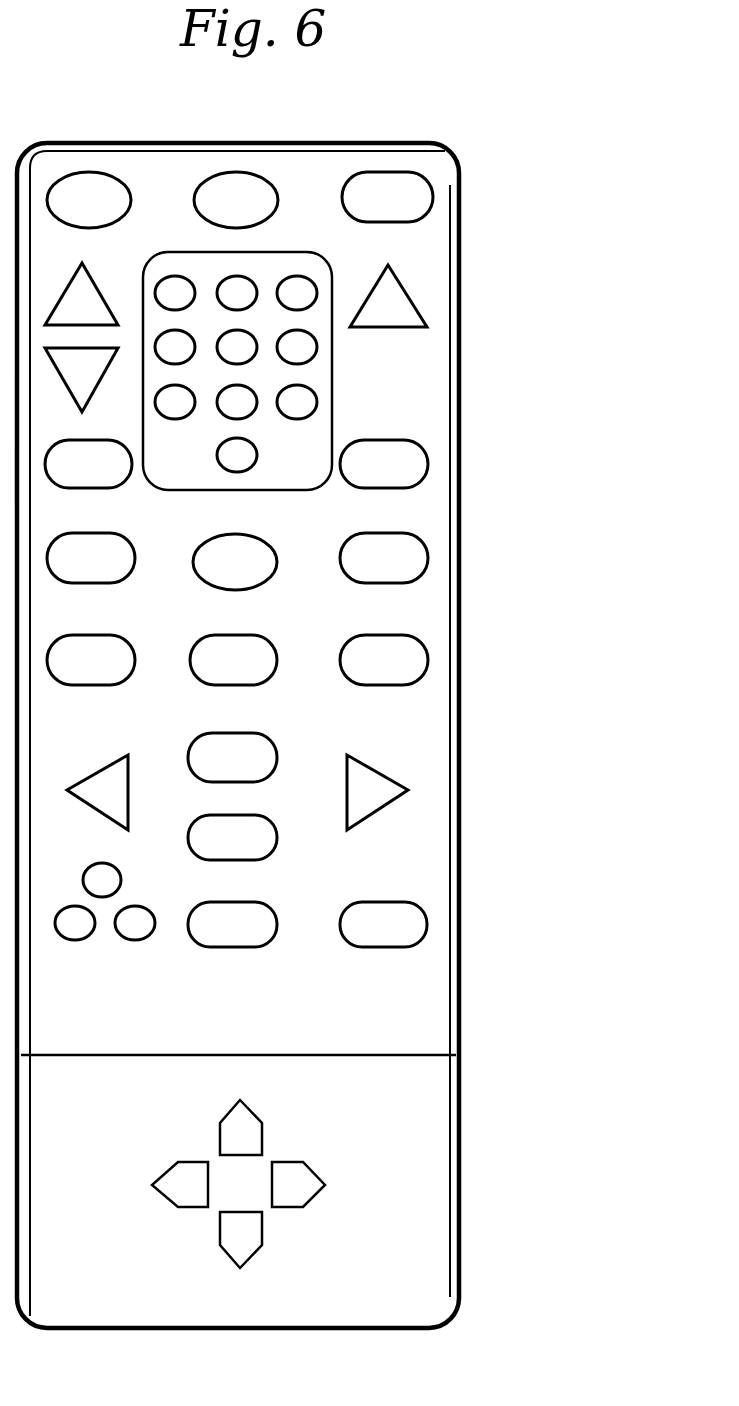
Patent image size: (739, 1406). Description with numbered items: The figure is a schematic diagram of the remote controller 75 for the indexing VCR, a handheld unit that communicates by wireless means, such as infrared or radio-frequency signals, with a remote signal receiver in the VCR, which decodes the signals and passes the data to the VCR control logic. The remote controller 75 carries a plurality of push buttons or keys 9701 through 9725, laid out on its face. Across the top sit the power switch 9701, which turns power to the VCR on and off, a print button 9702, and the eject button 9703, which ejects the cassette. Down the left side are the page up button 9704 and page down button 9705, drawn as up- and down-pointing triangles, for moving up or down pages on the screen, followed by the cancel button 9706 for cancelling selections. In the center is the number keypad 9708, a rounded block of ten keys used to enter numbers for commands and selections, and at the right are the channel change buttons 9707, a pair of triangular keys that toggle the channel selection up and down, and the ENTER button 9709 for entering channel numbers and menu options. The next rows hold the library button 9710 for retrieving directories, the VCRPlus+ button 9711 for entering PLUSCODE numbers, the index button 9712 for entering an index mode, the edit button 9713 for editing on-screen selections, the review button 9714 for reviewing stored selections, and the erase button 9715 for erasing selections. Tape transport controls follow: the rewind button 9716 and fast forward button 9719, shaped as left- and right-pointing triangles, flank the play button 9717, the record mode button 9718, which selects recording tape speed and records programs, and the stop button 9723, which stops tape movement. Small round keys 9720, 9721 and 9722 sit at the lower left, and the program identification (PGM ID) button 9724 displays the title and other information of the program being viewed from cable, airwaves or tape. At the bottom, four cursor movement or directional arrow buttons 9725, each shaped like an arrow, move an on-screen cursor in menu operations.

The remote controller unit 75 is at (106, 135).
The power switch 9701 is at (92, 172).
The print button 9702 is at (261, 172).
The eject button 9703 is at (360, 223).
The page up button 9704 is at (115, 252).
The page down button 9705 is at (99, 387).
The cancel button 9706 is at (92, 489).
The channel change buttons 9707 is at (425, 349).
The number keypad 9708 is at (333, 430).
The ENTER button 9709 is at (399, 489).
The library button 9710 is at (93, 584).
The VCRPlus+ button 9711 is at (247, 510).
The index button 9712 is at (377, 584).
The edit button 9713 is at (88, 686).
The review button 9714 is at (263, 612).
The erase button 9715 is at (377, 686).
The rewind button 9716 is at (108, 732).
The play button 9717 is at (252, 713).
The record mode button 9718 is at (222, 815).
The fast forward button 9719 is at (408, 733).
The push button 9720 is at (115, 845).
The push button 9721 is at (68, 941).
The push button 9722 is at (130, 907).
The stop button 9723 is at (230, 902).
The program identification (PGM ID) button 9724 is at (418, 880).
The cursor movement or directional arrow buttons 9725 is at (295, 1130).